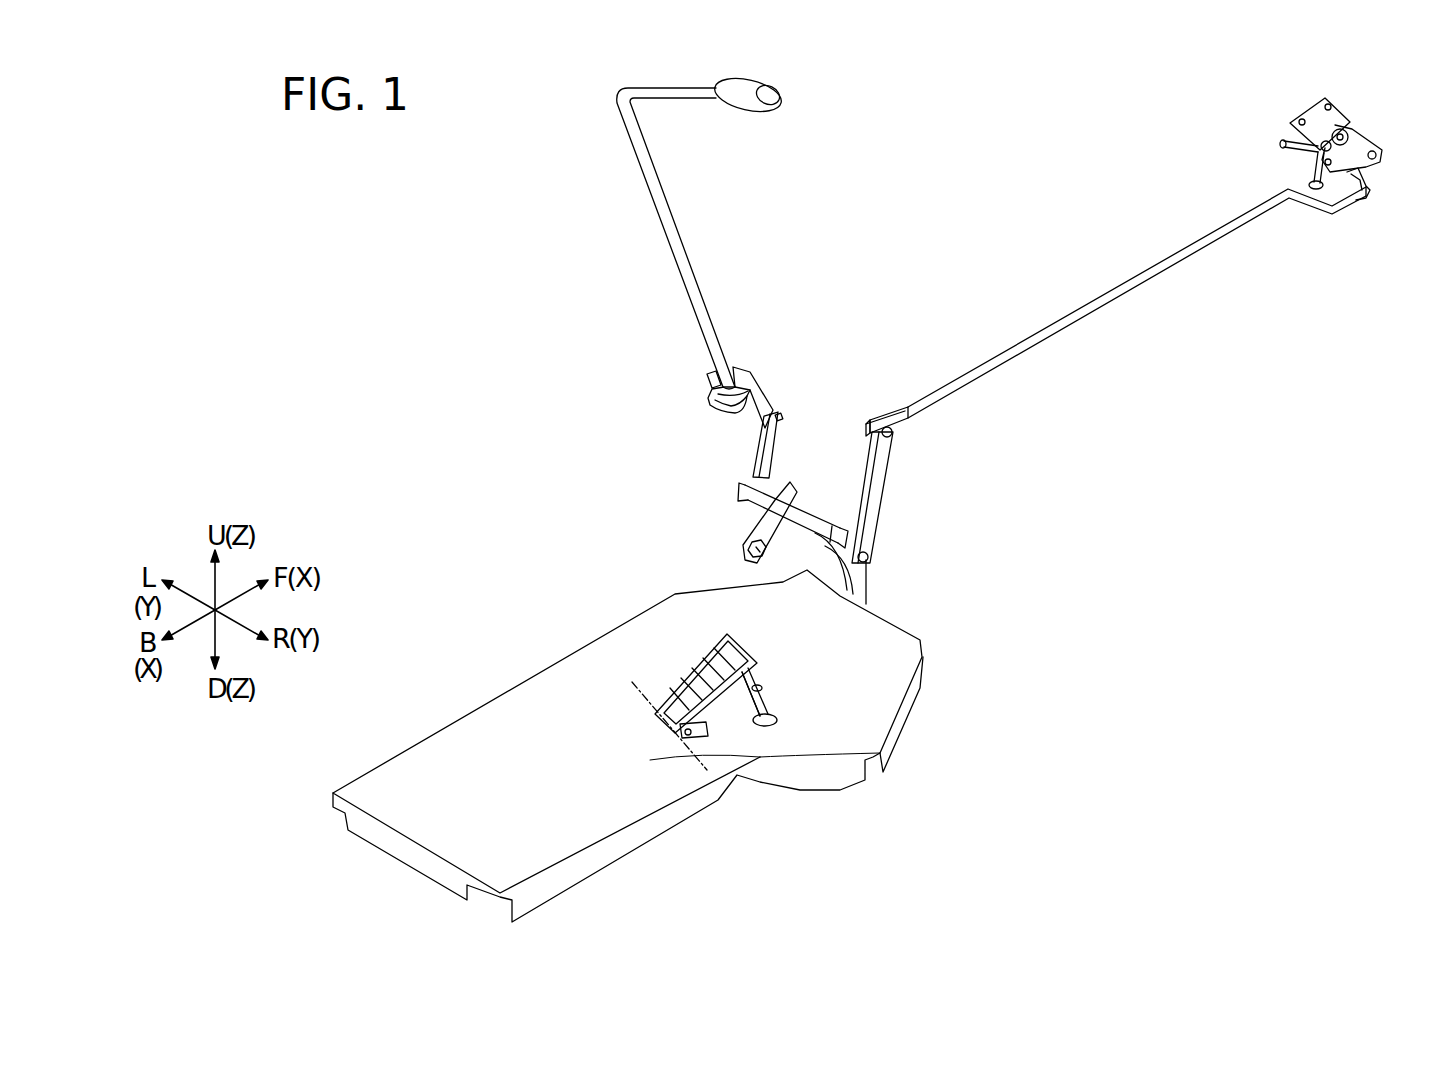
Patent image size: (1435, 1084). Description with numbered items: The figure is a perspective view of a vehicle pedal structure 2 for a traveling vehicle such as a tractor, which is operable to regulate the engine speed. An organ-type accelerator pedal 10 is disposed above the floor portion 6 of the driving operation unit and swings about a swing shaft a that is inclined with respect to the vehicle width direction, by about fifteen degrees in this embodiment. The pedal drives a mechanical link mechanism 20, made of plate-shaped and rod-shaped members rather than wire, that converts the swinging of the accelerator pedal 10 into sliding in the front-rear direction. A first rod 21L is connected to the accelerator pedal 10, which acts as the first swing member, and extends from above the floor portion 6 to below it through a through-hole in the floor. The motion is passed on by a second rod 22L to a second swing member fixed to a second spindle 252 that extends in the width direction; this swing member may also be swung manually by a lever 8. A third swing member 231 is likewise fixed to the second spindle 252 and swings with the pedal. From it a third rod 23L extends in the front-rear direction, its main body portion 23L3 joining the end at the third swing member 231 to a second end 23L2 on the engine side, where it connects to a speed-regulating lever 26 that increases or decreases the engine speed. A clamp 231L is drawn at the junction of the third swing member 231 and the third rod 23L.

The vehicle pedal structure 2 is at (438, 315).
The lever 8 is at (700, 103).
The floor portion 6 is at (540, 662).
The accelerator pedal 10 is at (683, 680).
The link mechanism 20 is at (922, 477).
The first rod 21L is at (760, 697).
The second rod 22L is at (866, 584).
The third rod 23L is at (1020, 350).
The second end 23L2 is at (1353, 200).
The main body portion 23L3 is at (1226, 246).
The third swing member 231 is at (878, 520).
The link clamp 231L is at (885, 410).
The second spindle 252 is at (815, 518).
The speed-regulating lever 26 is at (1358, 150).
The swing shaft a is at (697, 762).